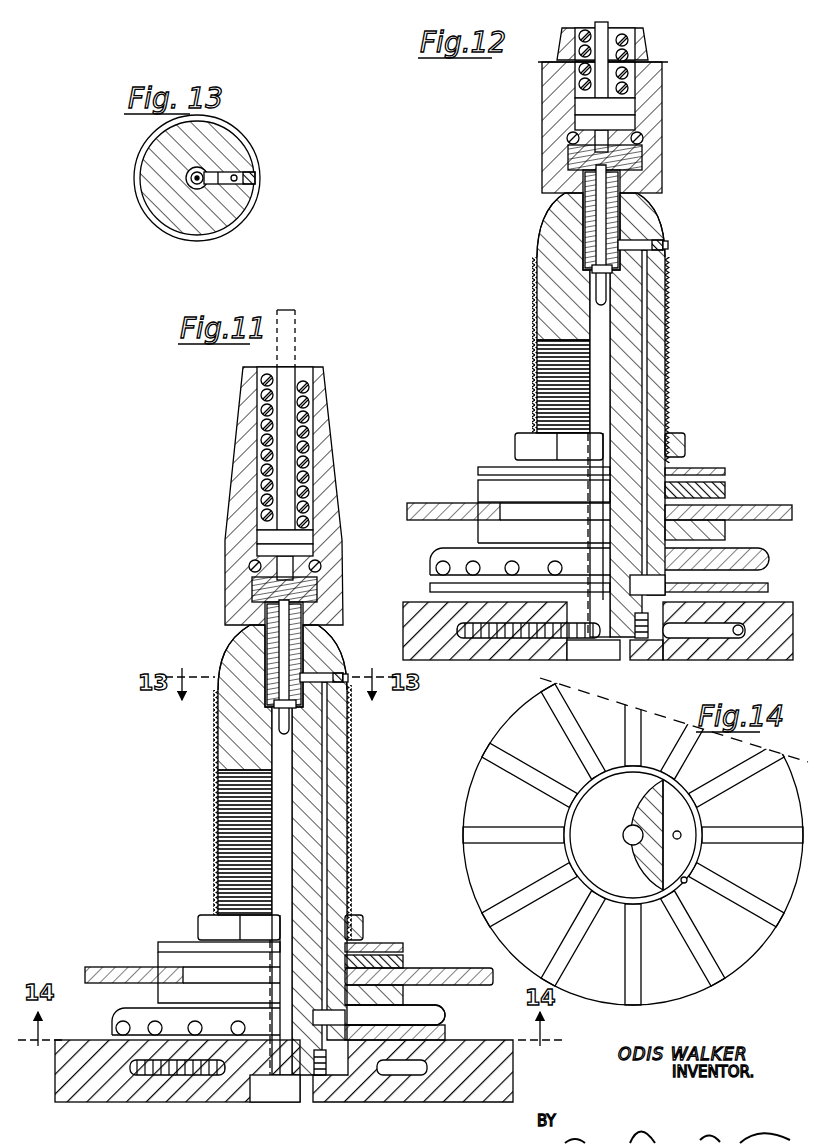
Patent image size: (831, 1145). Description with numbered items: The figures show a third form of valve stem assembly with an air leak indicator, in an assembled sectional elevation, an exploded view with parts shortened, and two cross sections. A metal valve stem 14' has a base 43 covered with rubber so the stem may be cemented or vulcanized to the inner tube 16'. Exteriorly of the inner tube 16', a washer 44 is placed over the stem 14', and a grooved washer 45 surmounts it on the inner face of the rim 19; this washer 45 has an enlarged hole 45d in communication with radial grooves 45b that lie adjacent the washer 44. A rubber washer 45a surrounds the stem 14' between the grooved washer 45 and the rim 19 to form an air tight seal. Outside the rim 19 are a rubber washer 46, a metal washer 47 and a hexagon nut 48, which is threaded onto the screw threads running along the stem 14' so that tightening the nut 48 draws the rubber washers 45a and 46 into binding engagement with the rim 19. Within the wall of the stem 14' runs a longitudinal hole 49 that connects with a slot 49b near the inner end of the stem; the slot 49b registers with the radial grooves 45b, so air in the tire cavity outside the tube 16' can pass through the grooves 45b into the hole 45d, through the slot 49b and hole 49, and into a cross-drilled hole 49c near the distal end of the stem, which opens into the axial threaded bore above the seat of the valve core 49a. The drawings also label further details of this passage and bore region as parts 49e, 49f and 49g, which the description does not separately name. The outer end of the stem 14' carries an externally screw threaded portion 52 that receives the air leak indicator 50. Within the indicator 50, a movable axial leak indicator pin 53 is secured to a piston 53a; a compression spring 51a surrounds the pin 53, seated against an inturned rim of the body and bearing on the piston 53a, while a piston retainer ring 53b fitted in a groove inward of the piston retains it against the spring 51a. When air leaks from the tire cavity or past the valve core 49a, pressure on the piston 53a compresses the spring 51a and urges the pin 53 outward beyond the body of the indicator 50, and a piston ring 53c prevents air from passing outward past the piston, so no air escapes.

In FIG. 11, the valve stem 14' is at (314, 850).
In FIG. 13, the valve stem 14' is at (219, 178).
In FIG. 12, the valve stem 14' is at (633, 415).
In FIG. 14, the valve stem 14' is at (633, 901).
In FIG. 11, the inner tube 16' is at (177, 1087).
In FIG. 12, the inner tube 16' is at (511, 644).
In FIG. 11, the rim 19 is at (92, 966).
In FIG. 12, the rim 19 is at (740, 505).
In FIG. 11, the base 43 is at (392, 1097).
In FIG. 12, the base 43 is at (740, 640).
In FIG. 11, the washer 44 is at (446, 1034).
In FIG. 12, the washer 44 is at (768, 590).
In FIG. 11, the grooved washer 45 is at (140, 1020).
In FIG. 12, the grooved washer 45 is at (770, 558).
In FIG. 14, the grooved washer 45 is at (680, 990).
In FIG. 11, the rubber washer 45a is at (210, 978).
In FIG. 12, the rubber washer 45a is at (727, 530).
In FIG. 11, the radial grooves 45b is at (440, 1020).
In FIG. 12, the radial grooves 45b is at (505, 565).
In FIG. 14, the radial grooves 45b is at (762, 920).
In FIG. 14, the hole 45d is at (690, 890).
In FIG. 11, the rubber washer 46 is at (405, 962).
In FIG. 12, the rubber washer 46 is at (727, 488).
In FIG. 11, the metal washer 47 is at (376, 944).
In FIG. 12, the metal washer 47 is at (705, 468).
In FIG. 11, the hexagon nut 48 is at (360, 923).
In FIG. 12, the hexagon nut 48 is at (678, 445).
In FIG. 11, the hole 49 is at (350, 808).
In FIG. 13, the hole 49 is at (234, 182).
In FIG. 12, the hole 49 is at (662, 278).
In FIG. 14, the hole 49 is at (682, 833).
In FIG. 11, the valve core 49a is at (303, 612).
In FIG. 13, the valve core 49a is at (200, 185).
In FIG. 12, the valve core 49a is at (622, 180).
In FIG. 11, the slot 49b is at (316, 1062).
In FIG. 12, the slot 49b is at (657, 625).
In FIG. 14, the slot 49b is at (688, 882).
In FIG. 11, the cross-drilled hole 49c is at (320, 673).
In FIG. 13, the cross-drilled hole 49c is at (220, 183).
In FIG. 12, the cross-drilled hole 49c is at (635, 240).
In FIG. 11, the lug 49e is at (322, 1027).
In FIG. 12, the lug 49e is at (628, 650).
In FIG. 11, the collar 49f is at (274, 706).
In FIG. 12, the collar 49f is at (592, 270).
In FIG. 11, the pin end 49g is at (349, 680).
In FIG. 13, the pin end 49g is at (256, 178).
In FIG. 12, the pin end 49g is at (669, 245).
In FIG. 11, the air leak indicator 50 is at (342, 470).
In FIG. 12, the air leak indicator 50 is at (664, 128).
In FIG. 11, the compression spring 51a is at (305, 400).
In FIG. 12, the compression spring 51a is at (625, 78).
In FIG. 11, the externally screw threaded portion 52 is at (242, 634).
In FIG. 12, the externally screw threaded portion 52 is at (562, 205).
In FIG. 11, the leak indicator pin 53 is at (288, 368).
In FIG. 12, the leak indicator pin 53 is at (606, 30).
In FIG. 11, the piston 53a is at (305, 540).
In FIG. 12, the piston 53a is at (583, 100).
In FIG. 11, the piston retainer ring 53b is at (320, 588).
In FIG. 12, the piston retainer ring 53b is at (644, 152).
In FIG. 11, the piston ring 53c is at (321, 562).
In FIG. 12, the piston ring 53c is at (567, 139).